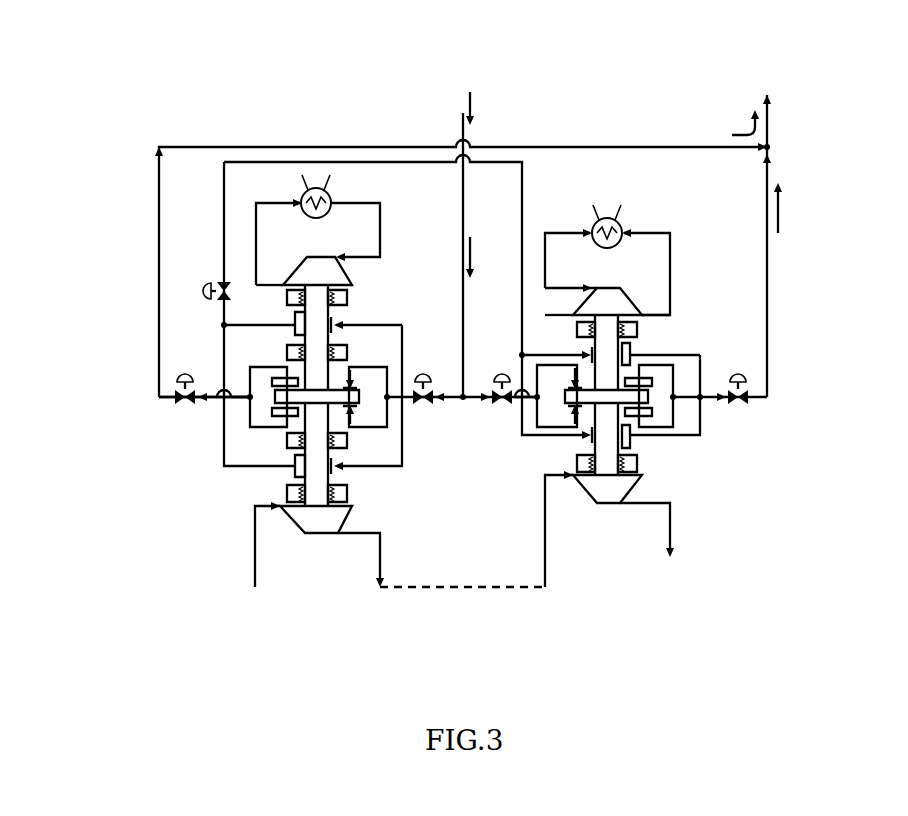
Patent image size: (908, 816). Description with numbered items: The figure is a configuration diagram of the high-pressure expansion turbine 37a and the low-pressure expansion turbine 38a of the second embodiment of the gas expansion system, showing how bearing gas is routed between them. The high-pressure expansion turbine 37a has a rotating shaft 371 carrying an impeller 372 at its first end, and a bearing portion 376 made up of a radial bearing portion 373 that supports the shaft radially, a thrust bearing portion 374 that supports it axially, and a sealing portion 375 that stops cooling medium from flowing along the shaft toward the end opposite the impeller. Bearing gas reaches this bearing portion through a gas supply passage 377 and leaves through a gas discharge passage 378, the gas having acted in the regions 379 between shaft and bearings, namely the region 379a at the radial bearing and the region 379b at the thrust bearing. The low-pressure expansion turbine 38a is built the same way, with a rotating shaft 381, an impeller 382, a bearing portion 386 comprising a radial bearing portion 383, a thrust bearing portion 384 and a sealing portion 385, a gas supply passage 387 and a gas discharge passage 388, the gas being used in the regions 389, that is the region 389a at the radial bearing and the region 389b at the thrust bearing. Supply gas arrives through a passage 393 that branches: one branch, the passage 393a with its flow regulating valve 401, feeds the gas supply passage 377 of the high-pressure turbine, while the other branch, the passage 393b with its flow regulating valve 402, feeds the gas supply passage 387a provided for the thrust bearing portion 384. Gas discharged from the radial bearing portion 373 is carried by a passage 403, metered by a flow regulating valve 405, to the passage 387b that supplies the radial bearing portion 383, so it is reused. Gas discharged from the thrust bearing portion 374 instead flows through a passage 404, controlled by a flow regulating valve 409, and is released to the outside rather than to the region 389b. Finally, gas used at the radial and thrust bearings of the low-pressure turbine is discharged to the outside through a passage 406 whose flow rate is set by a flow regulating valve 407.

The high-pressure expansion turbine 37a is at (388, 118).
The low-pressure expansion turbine 38a is at (709, 118).
The rotating shaft 371 is at (320, 492).
The impeller 372 is at (290, 520).
The radial bearing portion 373 is at (294, 334).
The thrust bearing portion 374 is at (283, 411).
The sealing portion 375 is at (287, 493).
The bearing portion 376 is at (72, 427).
The gas supply passage 377 is at (404, 300).
The gas discharge passage 378 is at (240, 292).
The bearing gas regions 379 is at (350, 80).
The region 379a is at (331, 323).
The region 379b is at (351, 382).
The rotating shaft 381 is at (605, 466).
The impeller 382 is at (633, 490).
The radial bearing portion 383 is at (634, 361).
The thrust bearing portion 384 is at (641, 412).
The sealing portion 385 is at (638, 463).
The bearing portion 386 is at (850, 428).
The gas supply passage 387 is at (532, 297).
The gas supply passage 387a is at (556, 364).
The passage 387b is at (583, 352).
The gas discharge passage 388 is at (717, 300).
The bearing gas regions 389 is at (520, 643).
The region 389a is at (585, 437).
The region 389b is at (574, 412).
The passage 393 is at (462, 200).
The passage 393a is at (458, 402).
The passage 393b is at (474, 403).
The flow regulating valve 401 is at (423, 378).
The flow regulating valve 402 is at (502, 378).
The passage 403 is at (223, 192).
The passage 404 is at (157, 193).
The flow regulating valve 405 is at (205, 291).
The passage 406 is at (767, 262).
The flow regulating valve 407 is at (738, 378).
The flow regulating valve 409 is at (183, 378).